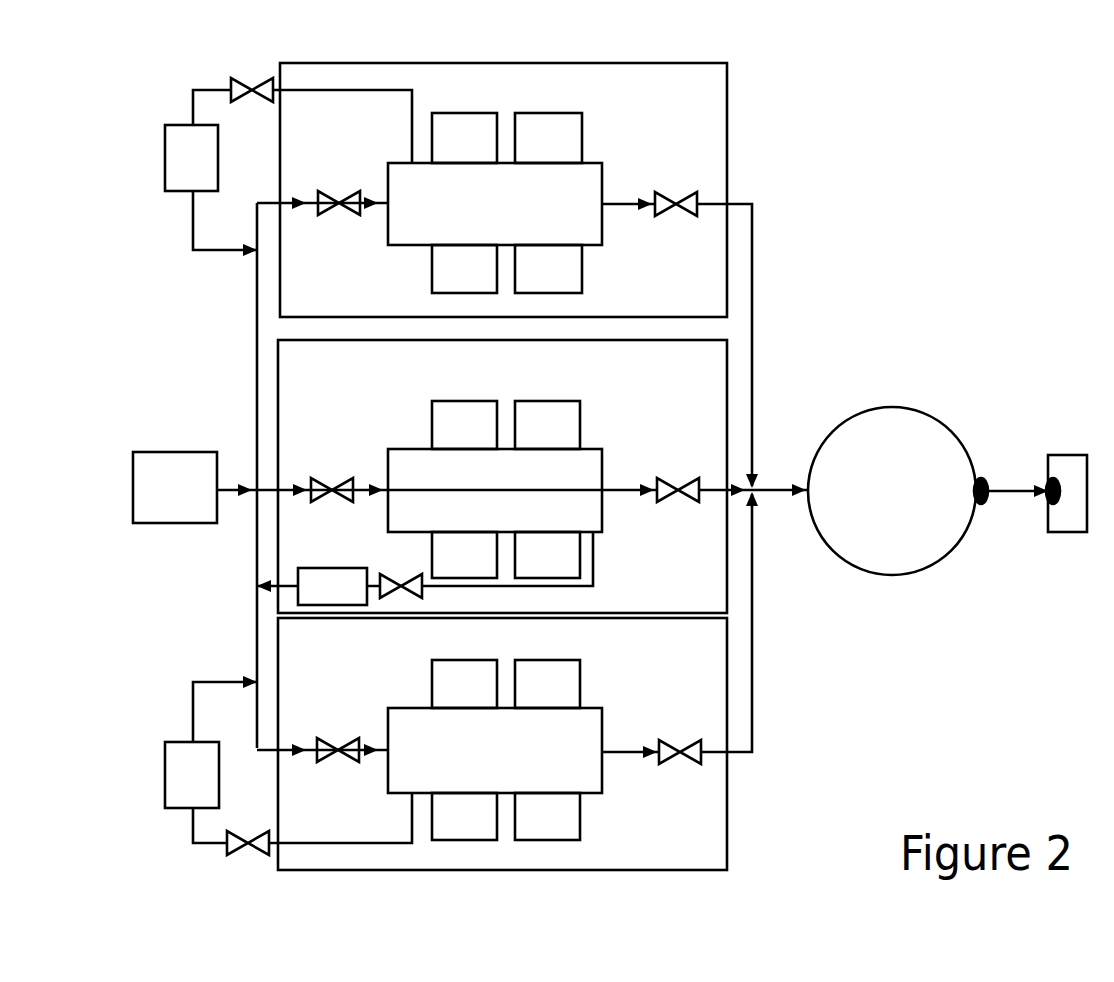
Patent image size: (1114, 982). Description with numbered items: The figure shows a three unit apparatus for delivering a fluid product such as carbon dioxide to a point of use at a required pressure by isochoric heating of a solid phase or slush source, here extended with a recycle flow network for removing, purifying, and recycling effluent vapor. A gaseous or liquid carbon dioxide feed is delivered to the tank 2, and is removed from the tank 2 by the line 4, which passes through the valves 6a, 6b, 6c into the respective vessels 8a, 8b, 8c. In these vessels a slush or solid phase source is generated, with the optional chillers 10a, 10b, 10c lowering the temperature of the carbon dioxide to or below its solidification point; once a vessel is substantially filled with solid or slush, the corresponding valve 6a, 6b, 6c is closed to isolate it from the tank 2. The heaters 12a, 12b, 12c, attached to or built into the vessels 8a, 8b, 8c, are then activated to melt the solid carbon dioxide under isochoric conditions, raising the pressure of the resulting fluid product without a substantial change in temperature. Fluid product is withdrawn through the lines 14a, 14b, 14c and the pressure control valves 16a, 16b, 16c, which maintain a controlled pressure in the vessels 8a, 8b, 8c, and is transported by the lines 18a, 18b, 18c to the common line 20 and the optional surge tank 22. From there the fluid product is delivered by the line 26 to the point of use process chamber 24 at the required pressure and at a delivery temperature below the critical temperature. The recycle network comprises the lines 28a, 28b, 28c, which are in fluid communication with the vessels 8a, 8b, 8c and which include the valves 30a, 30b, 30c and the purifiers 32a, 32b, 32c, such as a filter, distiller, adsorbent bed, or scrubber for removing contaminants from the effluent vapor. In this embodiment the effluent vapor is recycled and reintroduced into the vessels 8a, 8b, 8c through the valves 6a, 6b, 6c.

The tank 2 is at (165, 523).
The line 4 is at (230, 489).
The valve 6a is at (345, 762).
The valve 6b is at (337, 477).
The valve 6c is at (345, 215).
The vessel 8a is at (388, 708).
The vessel 8b is at (388, 449).
The vessel 8c is at (388, 163).
The chiller 10a is at (432, 682).
The chiller 10b is at (470, 401).
The chiller 10c is at (452, 113).
The heater 12a is at (570, 830).
The heater 12b is at (560, 401).
The heater 12c is at (582, 135).
The line 14a is at (622, 752).
The line 14b is at (622, 490).
The line 14c is at (628, 204).
The pressure control valve 16a is at (690, 765).
The pressure control valve 16b is at (683, 503).
The pressure control valve 16c is at (683, 220).
The line 18a is at (727, 790).
The line 18b is at (718, 490).
The line 18c is at (752, 290).
The line 20 is at (780, 492).
The surge tank 22 is at (898, 575).
The point of use process chamber 24 is at (1068, 532).
The line 26 is at (1003, 491).
The line 28a is at (193, 826).
The line 28b is at (593, 570).
The line 28c is at (193, 110).
The valve 30a is at (253, 855).
The valve 30b is at (400, 575).
The valve 30c is at (262, 80).
The purifier 32a is at (165, 785).
The purifier 32b is at (325, 568).
The purifier 32c is at (218, 170).